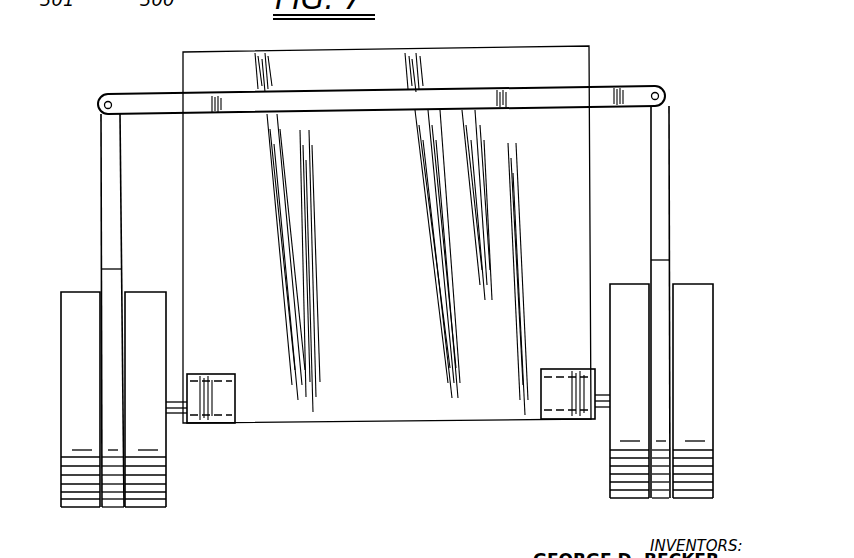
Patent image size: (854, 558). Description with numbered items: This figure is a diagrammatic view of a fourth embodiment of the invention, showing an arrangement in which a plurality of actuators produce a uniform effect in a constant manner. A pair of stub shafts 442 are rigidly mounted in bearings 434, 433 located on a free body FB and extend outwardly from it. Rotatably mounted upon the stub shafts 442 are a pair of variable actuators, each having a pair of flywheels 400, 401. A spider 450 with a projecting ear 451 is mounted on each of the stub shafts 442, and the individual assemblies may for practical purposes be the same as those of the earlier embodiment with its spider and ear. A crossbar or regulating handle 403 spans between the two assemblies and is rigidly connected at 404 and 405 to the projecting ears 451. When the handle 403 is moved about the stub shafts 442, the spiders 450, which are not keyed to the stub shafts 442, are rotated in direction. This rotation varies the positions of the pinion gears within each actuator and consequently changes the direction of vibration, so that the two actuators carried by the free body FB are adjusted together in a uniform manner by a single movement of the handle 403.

The free body FB is at (570, 80).
The crossbar or regulating handle 403 is at (400, 103).
The connection point 404 is at (100, 108).
The connection point 405 is at (665, 94).
The projecting ear 451 is at (110, 189).
The spider 450 is at (660, 298).
The flywheel 400 is at (167, 497).
The flywheel 401 is at (92, 500).
The bearing 434 is at (230, 412).
The bearing 433 is at (572, 406).
The stub shaft 442 is at (177, 418).